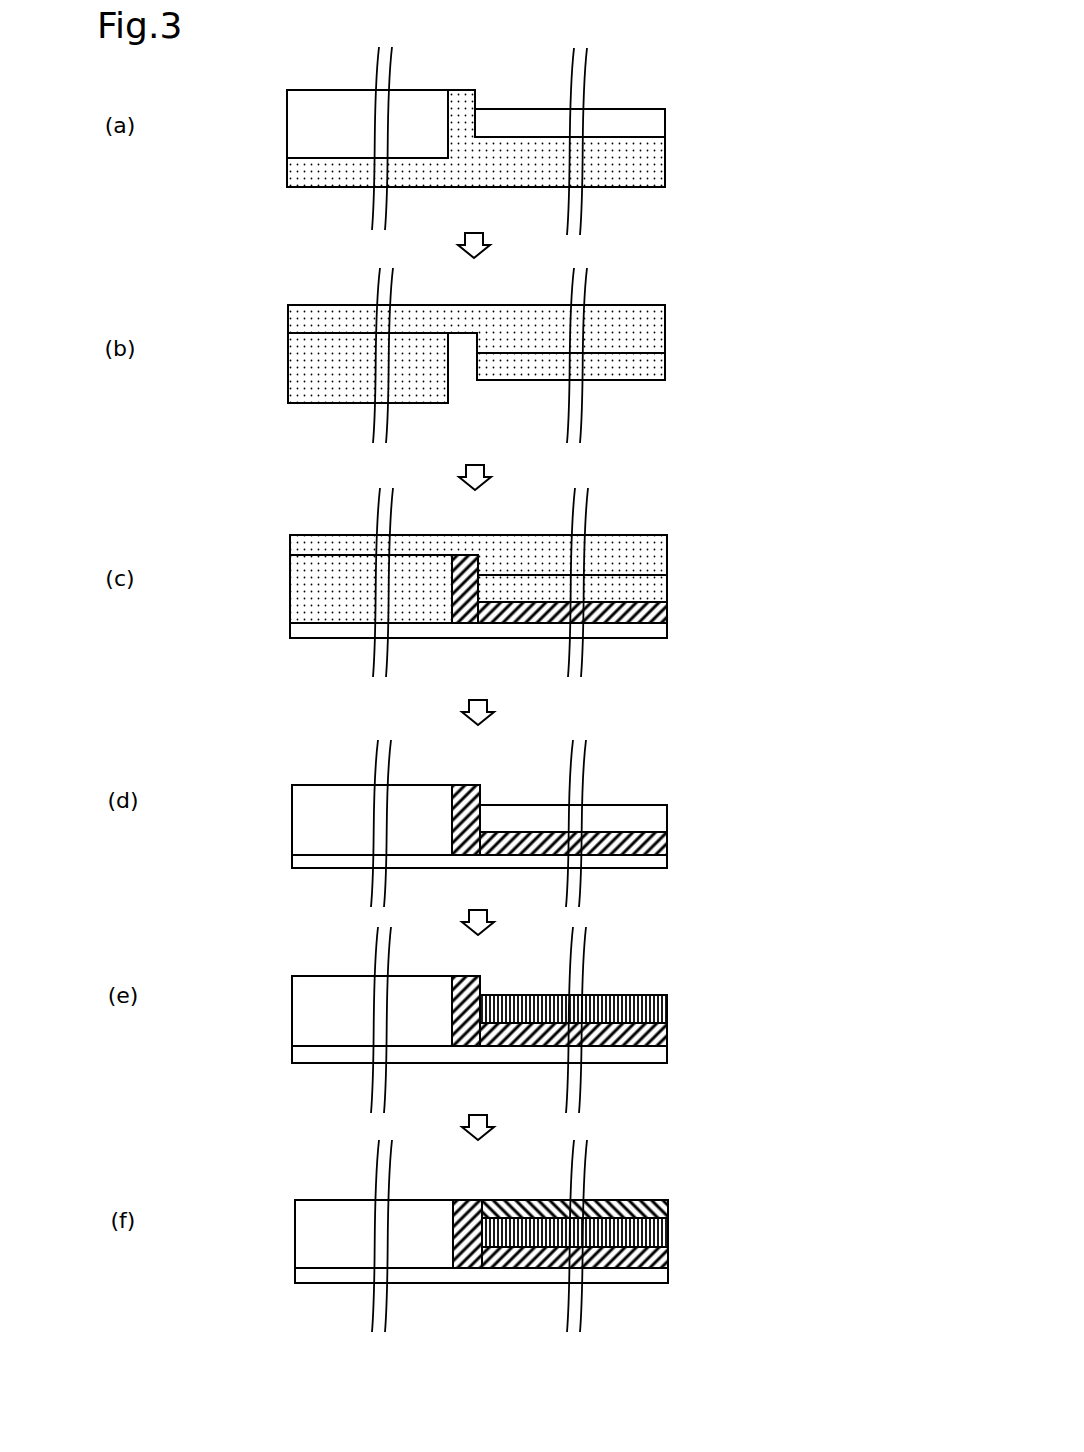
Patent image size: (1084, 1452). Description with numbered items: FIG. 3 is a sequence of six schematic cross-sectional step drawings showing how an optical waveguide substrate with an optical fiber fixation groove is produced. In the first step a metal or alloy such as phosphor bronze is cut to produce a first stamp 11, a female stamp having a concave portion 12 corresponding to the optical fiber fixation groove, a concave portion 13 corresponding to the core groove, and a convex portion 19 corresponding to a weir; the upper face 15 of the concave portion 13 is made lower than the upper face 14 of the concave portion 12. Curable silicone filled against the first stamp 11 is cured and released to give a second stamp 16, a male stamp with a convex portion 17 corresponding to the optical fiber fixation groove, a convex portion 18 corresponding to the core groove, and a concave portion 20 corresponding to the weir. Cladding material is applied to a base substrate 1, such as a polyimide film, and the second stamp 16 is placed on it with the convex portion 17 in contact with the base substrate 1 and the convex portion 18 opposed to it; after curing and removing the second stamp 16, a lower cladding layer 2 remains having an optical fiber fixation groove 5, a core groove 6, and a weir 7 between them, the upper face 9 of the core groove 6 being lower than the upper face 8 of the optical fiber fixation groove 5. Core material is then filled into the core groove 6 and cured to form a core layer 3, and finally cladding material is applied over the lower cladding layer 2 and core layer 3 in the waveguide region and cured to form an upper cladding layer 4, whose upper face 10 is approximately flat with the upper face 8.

The base substrate 1 is at (667, 630).
The lower cladding layer 2 is at (667, 843).
The core layer 3 is at (667, 818).
The upper cladding layer 4 is at (668, 1206).
The optical fiber fixation groove 5 is at (292, 818).
The core groove 6 is at (627, 805).
The weir 7 is at (452, 817).
The upper face of the optical fiber fixation groove 8 is at (292, 785).
The upper face of the core groove 9 is at (667, 805).
The upper face of the upper cladding layer 10 is at (668, 1200).
The first stamp 11 is at (665, 162).
The concave portion corresponding to the optical fiber fixation groove 12 is at (410, 90).
The concave portion corresponding to the core groove 13 is at (665, 122).
The upper face of the concave portion corresponding to the optical fiber fixation gr 14 is at (287, 90).
The upper face of the concave portion corresponding to the core groove 15 is at (665, 108).
The second stamp 16 is at (622, 305).
The convex portion corresponding to the optical fiber fixation groove 17 is at (288, 370).
The convex portion corresponding to the core groove 18 is at (665, 365).
The convex portion corresponding to the weir 19 is at (476, 97).
The concave portion corresponding to the weir 20 is at (460, 363).